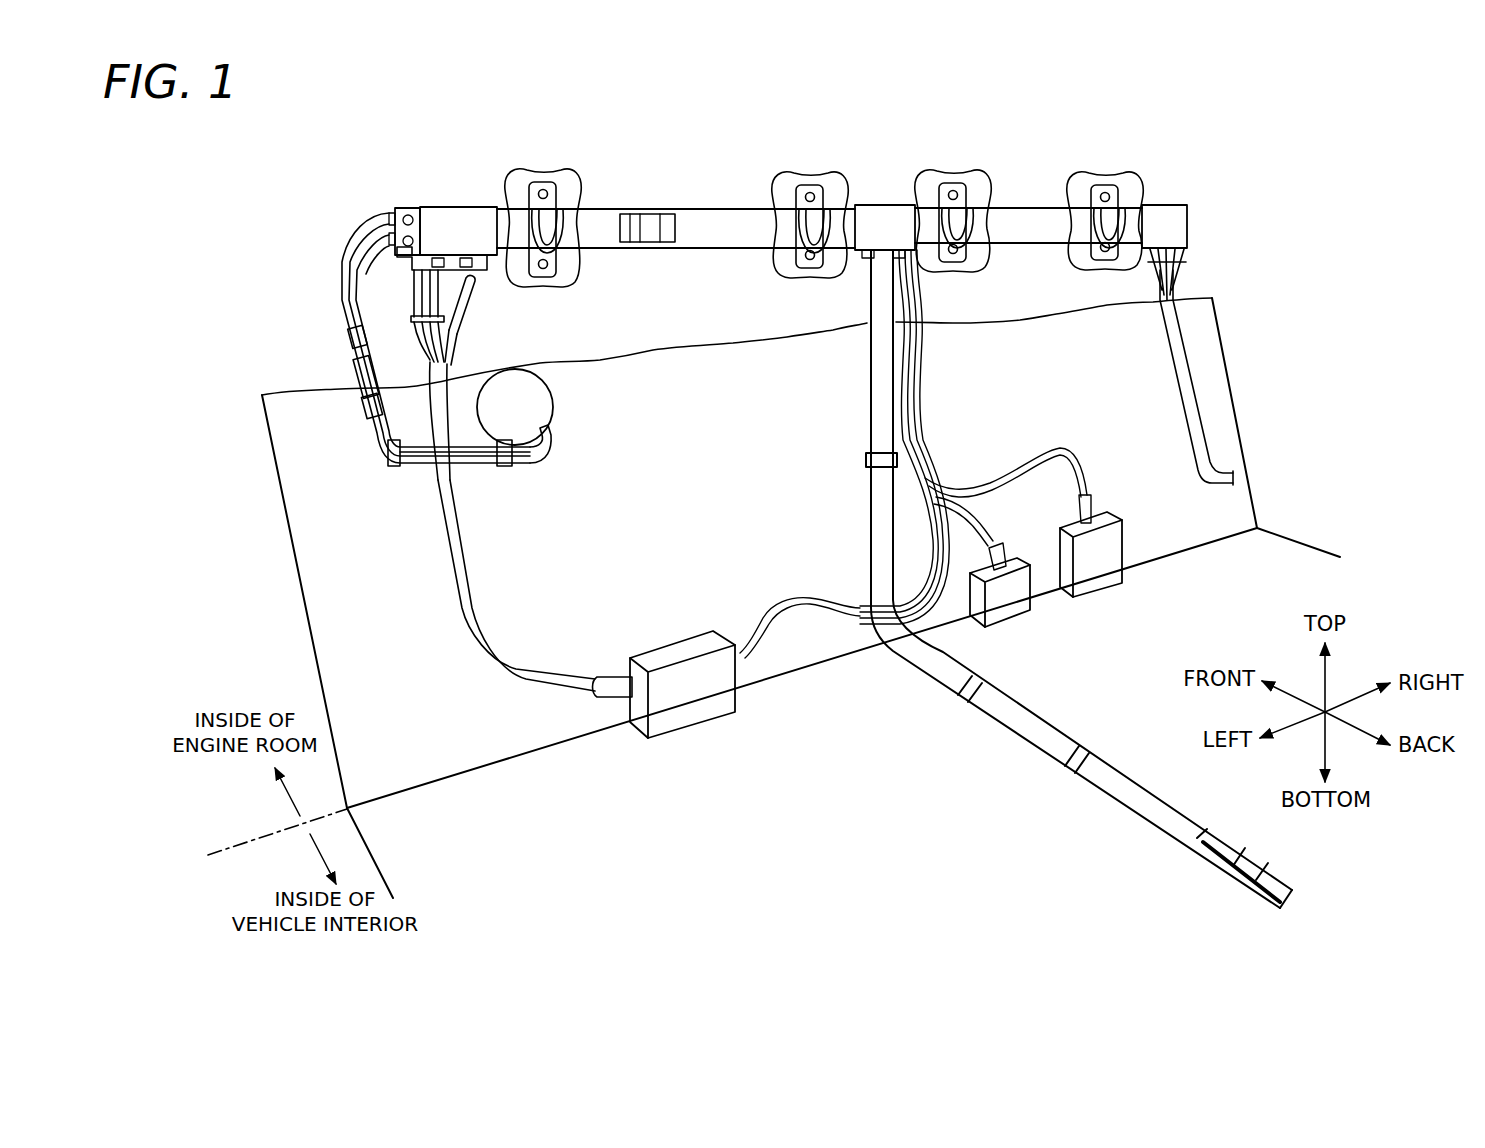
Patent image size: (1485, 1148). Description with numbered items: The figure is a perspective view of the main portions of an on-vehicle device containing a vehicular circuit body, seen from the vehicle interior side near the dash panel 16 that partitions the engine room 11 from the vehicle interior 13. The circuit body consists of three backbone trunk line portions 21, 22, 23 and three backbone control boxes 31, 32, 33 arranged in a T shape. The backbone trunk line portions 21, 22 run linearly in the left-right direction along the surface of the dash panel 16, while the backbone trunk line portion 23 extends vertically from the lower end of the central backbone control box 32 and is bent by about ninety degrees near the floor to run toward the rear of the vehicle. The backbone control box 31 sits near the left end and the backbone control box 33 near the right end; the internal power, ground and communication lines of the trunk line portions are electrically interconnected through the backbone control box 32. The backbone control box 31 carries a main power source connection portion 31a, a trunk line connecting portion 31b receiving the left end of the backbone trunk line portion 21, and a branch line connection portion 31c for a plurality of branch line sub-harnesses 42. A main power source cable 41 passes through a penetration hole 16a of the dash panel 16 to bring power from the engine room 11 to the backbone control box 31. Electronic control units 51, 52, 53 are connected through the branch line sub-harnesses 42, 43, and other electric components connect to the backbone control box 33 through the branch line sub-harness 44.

The engine room 11 is at (249, 616).
The vehicle interior 13 is at (774, 576).
The dash panel 16 is at (280, 492).
The penetration hole 16a is at (542, 405).
The backbone trunk line portion 21 is at (696, 228).
The backbone trunk line portion 22 is at (1016, 226).
The backbone trunk line portion 23 is at (945, 683).
The backbone control box 31 is at (473, 169).
The main power source connection portion 31a is at (409, 213).
The trunk line connecting portion 31b is at (498, 208).
The branch line connection portion 31c is at (455, 262).
The backbone control box 32 is at (888, 202).
The backbone control box 33 is at (1166, 202).
The main power source cable 41 is at (365, 218).
The branch line sub-harness 42 is at (465, 285).
The branch line sub-harness 43 is at (928, 464).
The branch line sub-harness 44 is at (1182, 272).
The electronic control unit 51 is at (695, 712).
The electronic control unit 52 is at (1005, 605).
The electronic control unit 53 is at (1095, 580).